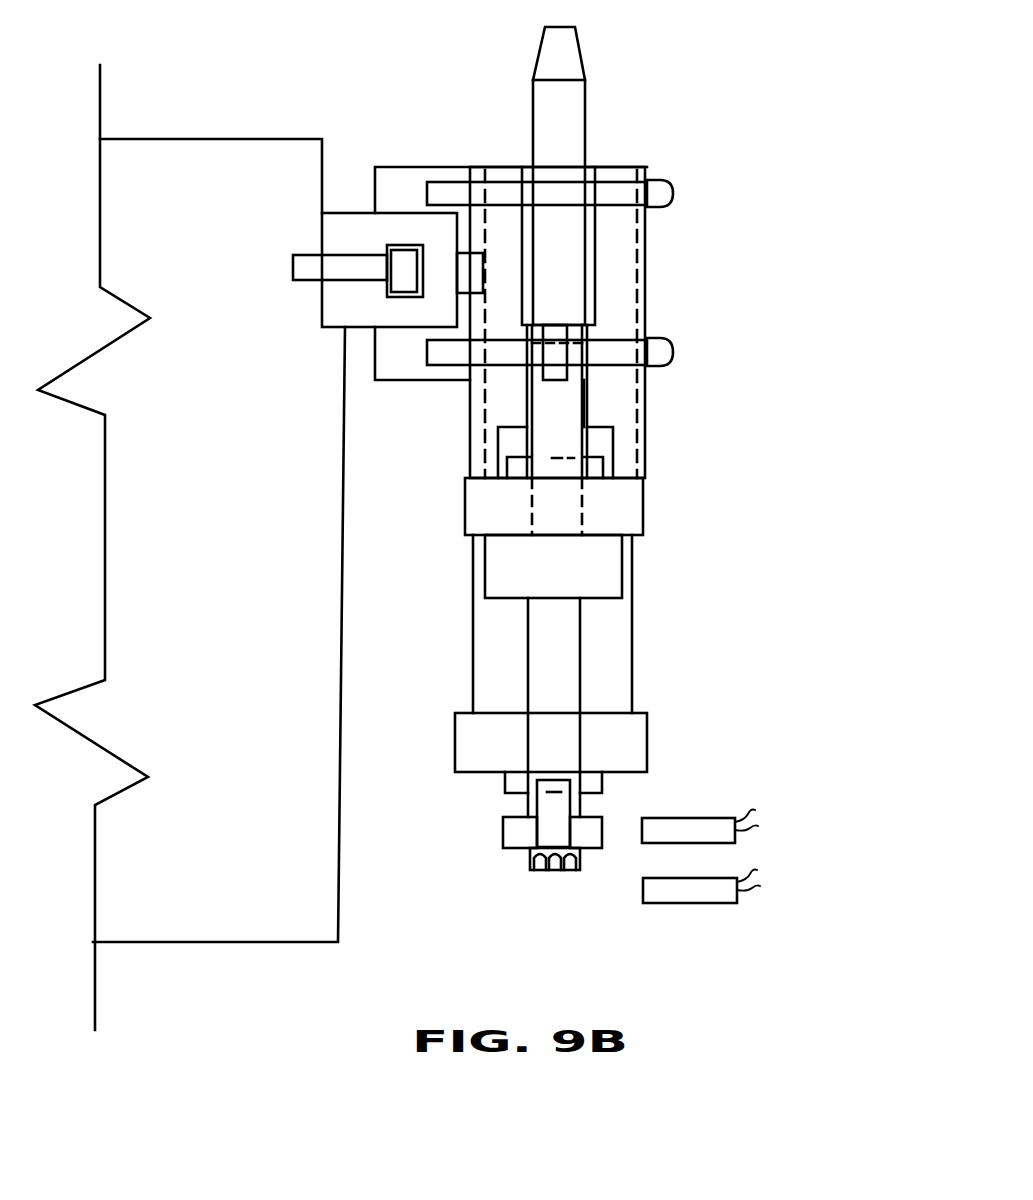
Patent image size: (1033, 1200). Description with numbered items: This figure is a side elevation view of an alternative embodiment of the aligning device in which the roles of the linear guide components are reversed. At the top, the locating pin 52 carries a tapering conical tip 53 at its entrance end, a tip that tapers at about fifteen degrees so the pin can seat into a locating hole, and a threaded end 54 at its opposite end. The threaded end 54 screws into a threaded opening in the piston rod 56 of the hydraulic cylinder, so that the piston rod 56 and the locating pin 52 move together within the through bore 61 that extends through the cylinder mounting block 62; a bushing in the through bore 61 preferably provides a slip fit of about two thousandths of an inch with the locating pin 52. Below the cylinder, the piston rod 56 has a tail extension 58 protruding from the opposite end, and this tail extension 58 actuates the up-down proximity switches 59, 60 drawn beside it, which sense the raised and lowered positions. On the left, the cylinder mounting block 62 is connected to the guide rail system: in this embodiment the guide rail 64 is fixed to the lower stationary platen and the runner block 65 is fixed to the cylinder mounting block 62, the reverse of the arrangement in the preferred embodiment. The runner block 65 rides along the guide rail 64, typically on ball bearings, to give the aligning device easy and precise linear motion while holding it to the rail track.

The locating pin 52 is at (587, 142).
The tapering conical tip 53 is at (583, 60).
The threaded end 54 is at (590, 337).
The piston rod 56 is at (582, 653).
The tail extension 58 is at (528, 802).
The proximity switch 59 is at (705, 818).
The proximity switch 60 is at (708, 903).
The through bore 61 is at (590, 385).
The cylinder mounting block 62 is at (647, 247).
The guide rail 64 is at (360, 212).
The runner block 65 is at (455, 167).